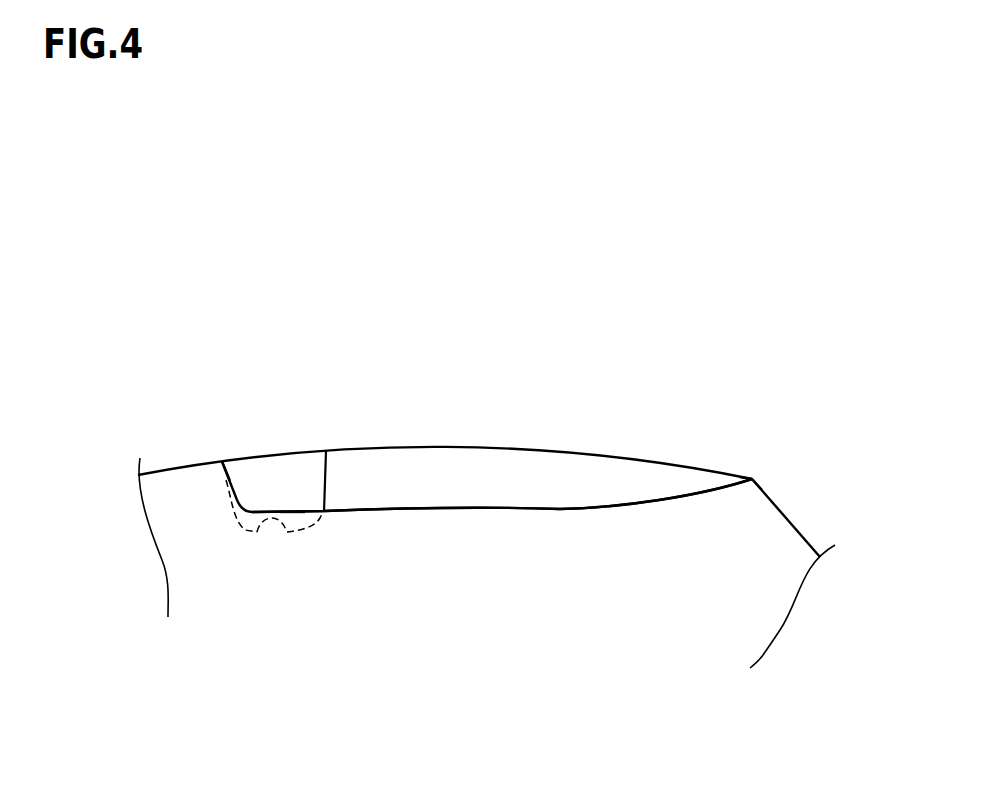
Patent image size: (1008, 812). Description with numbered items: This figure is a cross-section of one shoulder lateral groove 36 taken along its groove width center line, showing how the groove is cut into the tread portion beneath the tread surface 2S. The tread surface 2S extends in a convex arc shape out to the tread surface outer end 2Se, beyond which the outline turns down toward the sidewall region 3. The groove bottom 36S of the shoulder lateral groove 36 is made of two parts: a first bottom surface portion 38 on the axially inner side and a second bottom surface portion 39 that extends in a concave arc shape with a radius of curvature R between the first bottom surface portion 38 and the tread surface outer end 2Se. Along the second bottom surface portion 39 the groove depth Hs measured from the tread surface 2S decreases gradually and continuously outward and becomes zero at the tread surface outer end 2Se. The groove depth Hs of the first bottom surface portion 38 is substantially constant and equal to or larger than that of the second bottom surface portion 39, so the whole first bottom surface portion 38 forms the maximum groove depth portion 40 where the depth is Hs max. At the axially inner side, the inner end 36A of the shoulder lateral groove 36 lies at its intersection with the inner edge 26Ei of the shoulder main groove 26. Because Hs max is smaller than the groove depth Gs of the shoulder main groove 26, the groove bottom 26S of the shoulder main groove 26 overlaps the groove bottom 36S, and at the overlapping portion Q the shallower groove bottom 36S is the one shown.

The tread surface 2S is at (550, 451).
The tread surface outer end 2Se is at (755, 478).
The sidewall portion 3 is at (787, 518).
The shoulder main groove 26 is at (279, 583).
The groove bottom of shoulder main groove 26S is at (286, 528).
The inner edge of shoulder main groove 26Ei is at (222, 465).
The shoulder lateral groove 36 is at (477, 478).
The inner end of shoulder lateral groove 36A is at (232, 482).
The groove bottom of shoulder lateral groove 36S is at (682, 698).
The first bottom surface portion 38 is at (457, 509).
The maximum groove depth portion 40 is at (423, 602).
The second bottom surface portion 39 is at (663, 500).
The overlapping portion Q is at (293, 503).
The radius of curvature R is at (632, 503).
The groove depth Hs is at (383, 507).
The groove depth of shoulder main groove Gs is at (252, 533).